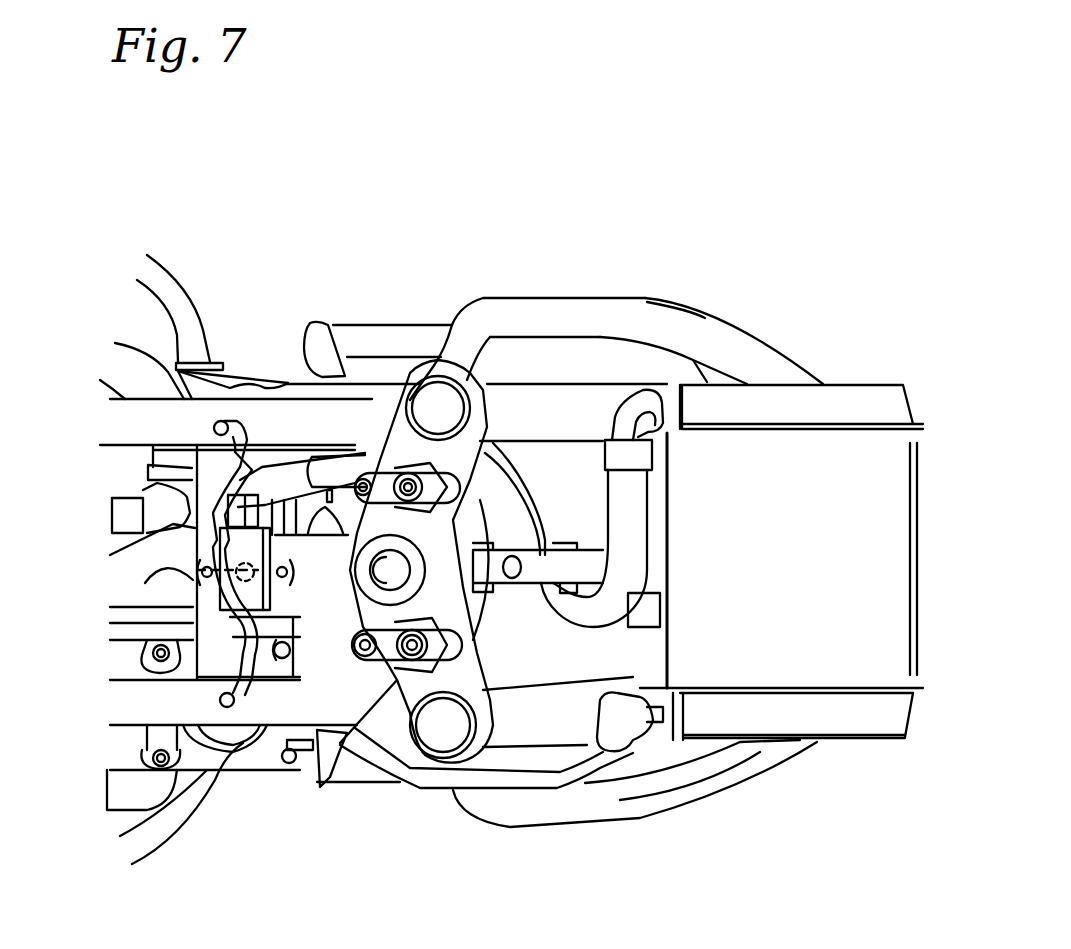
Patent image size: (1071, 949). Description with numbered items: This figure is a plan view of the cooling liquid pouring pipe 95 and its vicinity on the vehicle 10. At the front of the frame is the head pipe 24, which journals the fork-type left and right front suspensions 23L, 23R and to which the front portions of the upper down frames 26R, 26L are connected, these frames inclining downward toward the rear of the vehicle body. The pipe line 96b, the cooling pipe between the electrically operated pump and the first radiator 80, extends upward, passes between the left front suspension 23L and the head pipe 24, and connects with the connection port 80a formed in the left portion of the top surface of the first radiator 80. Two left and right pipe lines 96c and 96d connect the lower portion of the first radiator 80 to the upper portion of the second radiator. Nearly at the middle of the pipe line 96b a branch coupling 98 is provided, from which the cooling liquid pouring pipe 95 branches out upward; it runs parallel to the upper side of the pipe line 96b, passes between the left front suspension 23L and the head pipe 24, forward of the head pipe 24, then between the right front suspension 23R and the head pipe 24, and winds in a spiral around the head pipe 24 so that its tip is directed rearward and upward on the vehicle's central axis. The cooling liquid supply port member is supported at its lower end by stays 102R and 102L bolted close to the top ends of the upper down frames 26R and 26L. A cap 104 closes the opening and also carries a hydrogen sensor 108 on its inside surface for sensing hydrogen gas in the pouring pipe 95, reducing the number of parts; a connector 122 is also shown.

The motorcycle 10 is at (652, 236).
The left front suspension 23L is at (557, 413).
The right front suspension 23R is at (545, 723).
The head pipe 24 is at (413, 580).
The left upper down frame 26L is at (212, 412).
The right upper down frame 26R is at (210, 727).
The first radiator 80 is at (830, 463).
The connection port 80a is at (658, 432).
The cooling liquid pouring pipe 95 is at (342, 462).
The pipe line 96b is at (637, 522).
The pipe line 96c is at (732, 770).
The pipe line 96d is at (753, 367).
The branch coupling 98 is at (341, 355).
The left stay 102L is at (192, 468).
The right stay 102R is at (210, 688).
The cap 104 is at (218, 590).
The hydrogen sensor 108 is at (195, 570).
The connector 122 is at (617, 757).